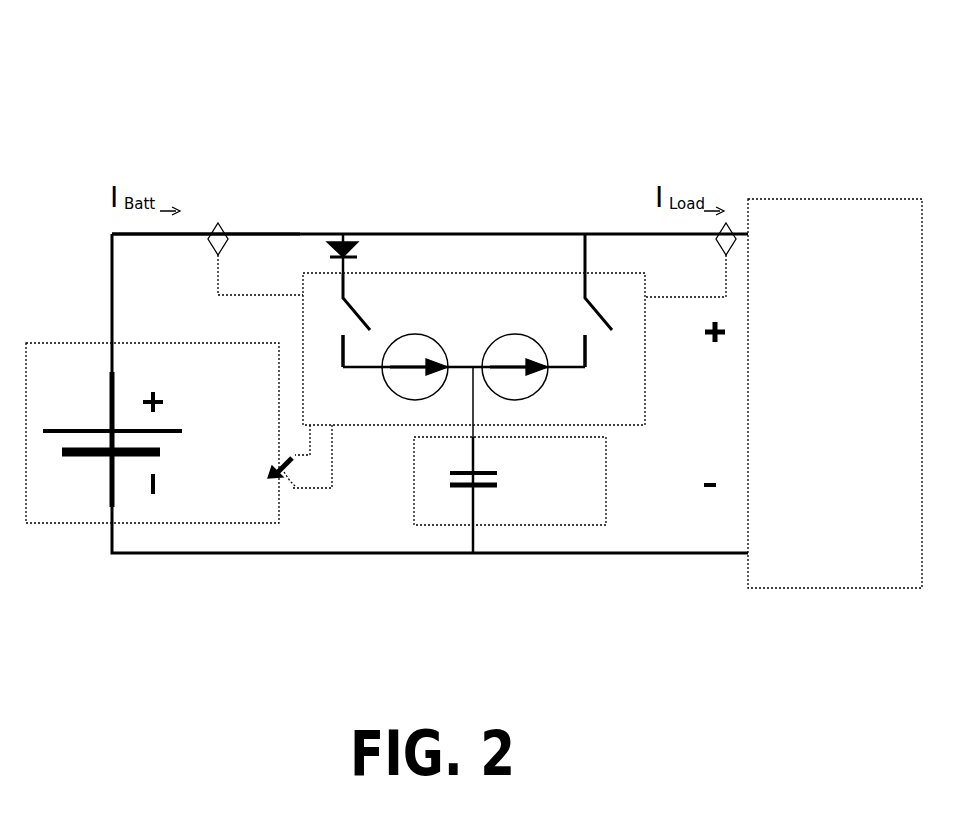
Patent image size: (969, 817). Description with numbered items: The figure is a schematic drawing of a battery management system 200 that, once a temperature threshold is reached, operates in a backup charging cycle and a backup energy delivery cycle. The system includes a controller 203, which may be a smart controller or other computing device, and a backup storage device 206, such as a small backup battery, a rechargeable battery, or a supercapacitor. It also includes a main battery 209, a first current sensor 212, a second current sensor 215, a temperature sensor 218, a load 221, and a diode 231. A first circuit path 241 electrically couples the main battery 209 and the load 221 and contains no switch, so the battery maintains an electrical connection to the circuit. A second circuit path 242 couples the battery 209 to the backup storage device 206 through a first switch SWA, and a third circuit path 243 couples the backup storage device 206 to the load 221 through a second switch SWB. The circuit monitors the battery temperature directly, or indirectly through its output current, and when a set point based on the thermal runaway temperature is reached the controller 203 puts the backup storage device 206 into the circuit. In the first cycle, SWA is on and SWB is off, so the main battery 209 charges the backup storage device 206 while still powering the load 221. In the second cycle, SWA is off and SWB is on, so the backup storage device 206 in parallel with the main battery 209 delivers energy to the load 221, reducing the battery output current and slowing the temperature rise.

The battery management system 200 is at (541, 62).
The controller 203 is at (478, 273).
The backup storage device 206 is at (558, 525).
The main battery 209 is at (73, 523).
The first current sensor 212 is at (222, 226).
The second current sensor 215 is at (730, 226).
The temperature sensor 218 is at (303, 523).
The load 221 is at (830, 199).
The diode 231 is at (350, 246).
The first circuit path 241 is at (188, 234).
The second circuit path 242 is at (330, 258).
The third circuit path 243 is at (583, 258).